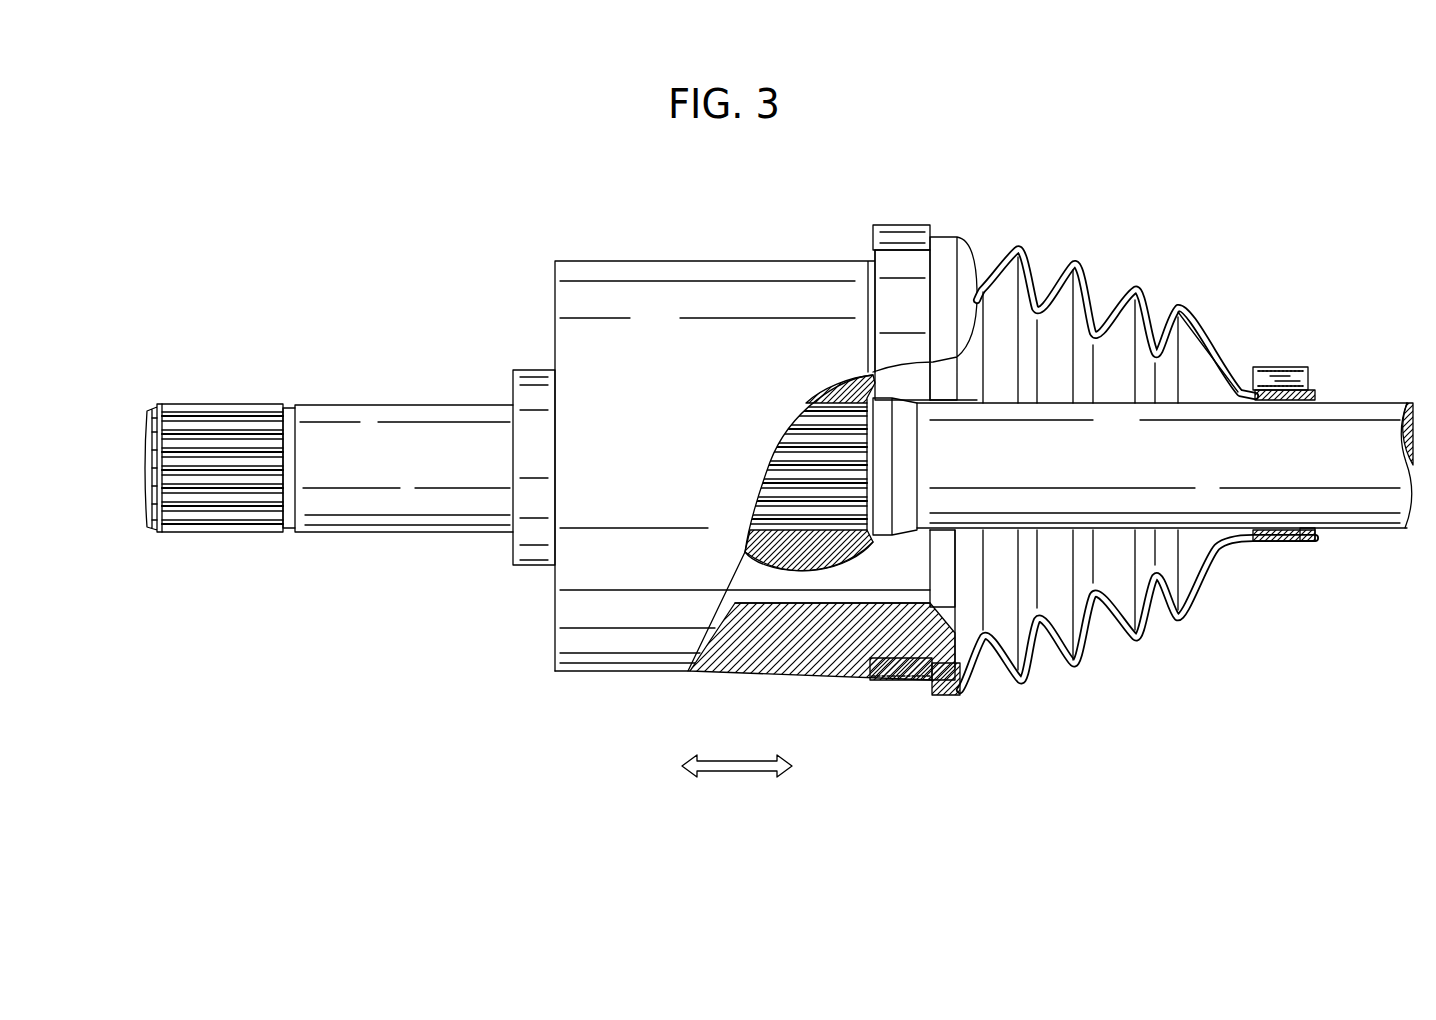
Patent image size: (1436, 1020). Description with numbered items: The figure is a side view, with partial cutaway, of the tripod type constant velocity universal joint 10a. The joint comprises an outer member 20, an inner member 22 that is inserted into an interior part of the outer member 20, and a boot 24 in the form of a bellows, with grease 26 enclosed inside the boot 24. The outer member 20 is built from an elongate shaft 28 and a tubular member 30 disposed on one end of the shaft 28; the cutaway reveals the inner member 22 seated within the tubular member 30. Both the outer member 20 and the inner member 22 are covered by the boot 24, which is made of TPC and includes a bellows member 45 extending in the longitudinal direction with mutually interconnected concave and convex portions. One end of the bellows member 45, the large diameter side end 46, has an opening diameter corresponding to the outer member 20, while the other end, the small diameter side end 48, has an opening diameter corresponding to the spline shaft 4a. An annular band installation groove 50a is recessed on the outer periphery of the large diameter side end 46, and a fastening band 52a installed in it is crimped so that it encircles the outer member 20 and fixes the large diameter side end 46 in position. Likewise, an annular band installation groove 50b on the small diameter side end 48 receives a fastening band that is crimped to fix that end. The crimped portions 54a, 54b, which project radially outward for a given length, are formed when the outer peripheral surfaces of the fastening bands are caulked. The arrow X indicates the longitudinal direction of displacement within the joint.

The tripod type constant velocity universal joint 10a is at (392, 190).
The outer member 20 is at (734, 455).
The tubular member 30 is at (635, 620).
The inner member 22 is at (789, 585).
The shaft 28 is at (430, 493).
The spline shaft 4a is at (1370, 420).
The boot 24 is at (1094, 487).
The bellows member 45 is at (1072, 264).
The grease 26 is at (1193, 365).
The large diameter side end 46 is at (900, 683).
The band installation groove 50a is at (917, 690).
The band installation groove 50b is at (1264, 543).
The small diameter side end 48 is at (1298, 543).
The fastening band 52a is at (887, 262).
The crimped portion 54a is at (896, 232).
The crimped portion 54b is at (1290, 367).